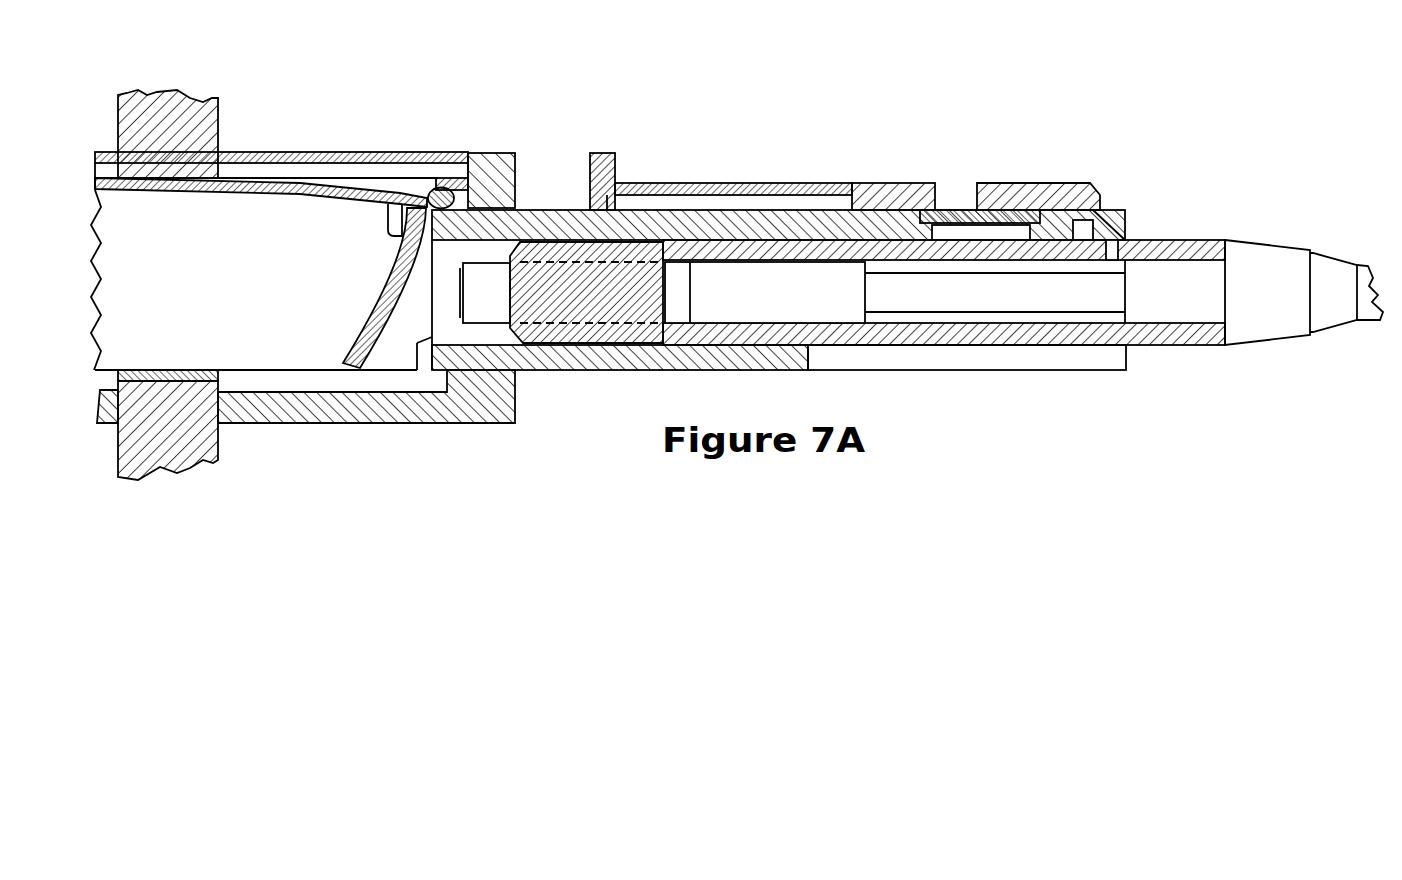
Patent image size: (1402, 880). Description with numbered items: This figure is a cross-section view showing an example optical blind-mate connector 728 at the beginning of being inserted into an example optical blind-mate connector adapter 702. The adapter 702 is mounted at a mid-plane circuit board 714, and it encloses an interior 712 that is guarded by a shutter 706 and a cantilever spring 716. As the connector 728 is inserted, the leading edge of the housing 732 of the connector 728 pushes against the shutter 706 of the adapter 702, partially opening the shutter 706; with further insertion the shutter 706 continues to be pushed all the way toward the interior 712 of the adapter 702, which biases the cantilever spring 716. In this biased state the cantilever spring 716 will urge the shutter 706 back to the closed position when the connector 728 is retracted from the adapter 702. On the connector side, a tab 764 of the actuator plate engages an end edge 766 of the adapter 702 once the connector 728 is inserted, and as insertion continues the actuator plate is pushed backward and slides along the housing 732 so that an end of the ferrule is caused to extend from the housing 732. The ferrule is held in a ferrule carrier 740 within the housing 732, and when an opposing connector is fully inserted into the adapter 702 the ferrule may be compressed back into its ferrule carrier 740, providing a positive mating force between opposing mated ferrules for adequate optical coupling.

The optical blind-mate connector adapter 702 is at (412, 137).
The mid-plane circuit board 714 is at (221, 108).
The interior of the adapter 712 is at (190, 298).
The cantilever spring 716 is at (316, 206).
The shutter 706 is at (360, 311).
The end edge of the adapter 766 is at (516, 162).
The tab of the actuator plate 764 is at (615, 164).
The optical blind-mate connector 728 is at (922, 158).
The housing of the connector 732 is at (611, 371).
The ferrule carrier 740 is at (972, 371).